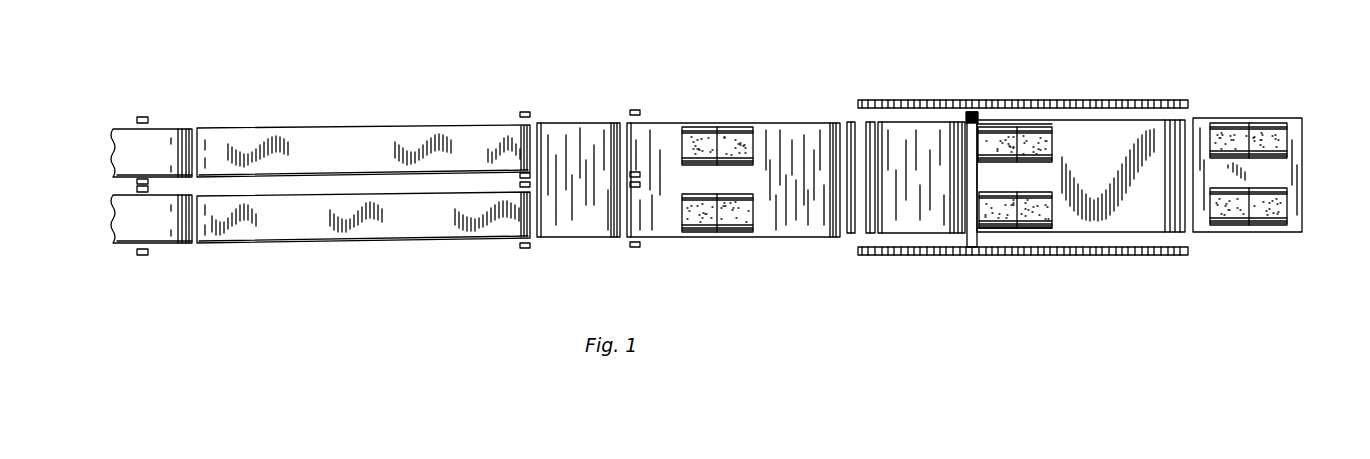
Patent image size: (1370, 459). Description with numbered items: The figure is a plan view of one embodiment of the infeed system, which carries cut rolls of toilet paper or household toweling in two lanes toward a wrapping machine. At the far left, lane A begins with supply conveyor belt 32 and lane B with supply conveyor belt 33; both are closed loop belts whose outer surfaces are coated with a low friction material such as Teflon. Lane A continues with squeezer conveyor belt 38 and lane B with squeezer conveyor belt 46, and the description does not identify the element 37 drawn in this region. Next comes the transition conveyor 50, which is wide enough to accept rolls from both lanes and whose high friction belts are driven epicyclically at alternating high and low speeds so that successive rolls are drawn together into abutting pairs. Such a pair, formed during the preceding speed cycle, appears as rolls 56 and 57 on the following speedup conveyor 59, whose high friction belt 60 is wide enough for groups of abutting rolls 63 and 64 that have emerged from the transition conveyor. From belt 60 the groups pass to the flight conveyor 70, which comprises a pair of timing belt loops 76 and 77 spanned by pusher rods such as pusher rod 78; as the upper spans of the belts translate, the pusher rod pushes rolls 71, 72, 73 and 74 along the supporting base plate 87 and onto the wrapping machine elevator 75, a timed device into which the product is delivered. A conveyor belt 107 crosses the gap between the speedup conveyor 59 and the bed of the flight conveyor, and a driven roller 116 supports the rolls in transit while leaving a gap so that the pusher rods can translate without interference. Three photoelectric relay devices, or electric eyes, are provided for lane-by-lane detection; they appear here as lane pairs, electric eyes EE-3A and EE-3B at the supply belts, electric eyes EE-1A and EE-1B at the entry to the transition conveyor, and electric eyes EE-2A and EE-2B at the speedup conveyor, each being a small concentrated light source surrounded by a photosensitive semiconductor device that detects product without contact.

The supply conveyor belt 32 is at (197, 223).
The supply conveyor belt 33 is at (179, 136).
The upper web strip 37 is at (363, 207).
The squeezer conveyor belt 38 is at (410, 222).
The squeezer conveyor belt 46 is at (412, 136).
The transition conveyor 50 is at (581, 253).
The paper roll 56 is at (705, 215).
The paper roll 57 is at (736, 206).
The speedup conveyor 59 is at (733, 201).
The speedup conveyor belt 60 is at (803, 128).
The abutting roll 63 is at (694, 134).
The abutting roll 64 is at (736, 140).
The flight conveyor 70 is at (1033, 207).
The product roll 71 is at (1003, 215).
The product roll 72 is at (1037, 210).
The product roll 73 is at (1004, 130).
The product roll 74 is at (1045, 130).
The wrapping machine elevator 75 is at (1280, 245).
The timing belt loop 76 is at (1178, 250).
The timing belt loop 77 is at (1150, 100).
The pusher rod 78 is at (967, 240).
The supporting base plate 87 is at (1125, 210).
The conveyor belt 107 is at (948, 130).
The driven roller 116 is at (847, 122).
The electric eye EE-3B is at (150, 105).
The electric eye EE-3A is at (142, 266).
The electric eye EE-1B is at (548, 84).
The electric eye EE-1A is at (531, 255).
The electric eye EE-2B is at (641, 101).
The electric eye EE-2A is at (636, 256).